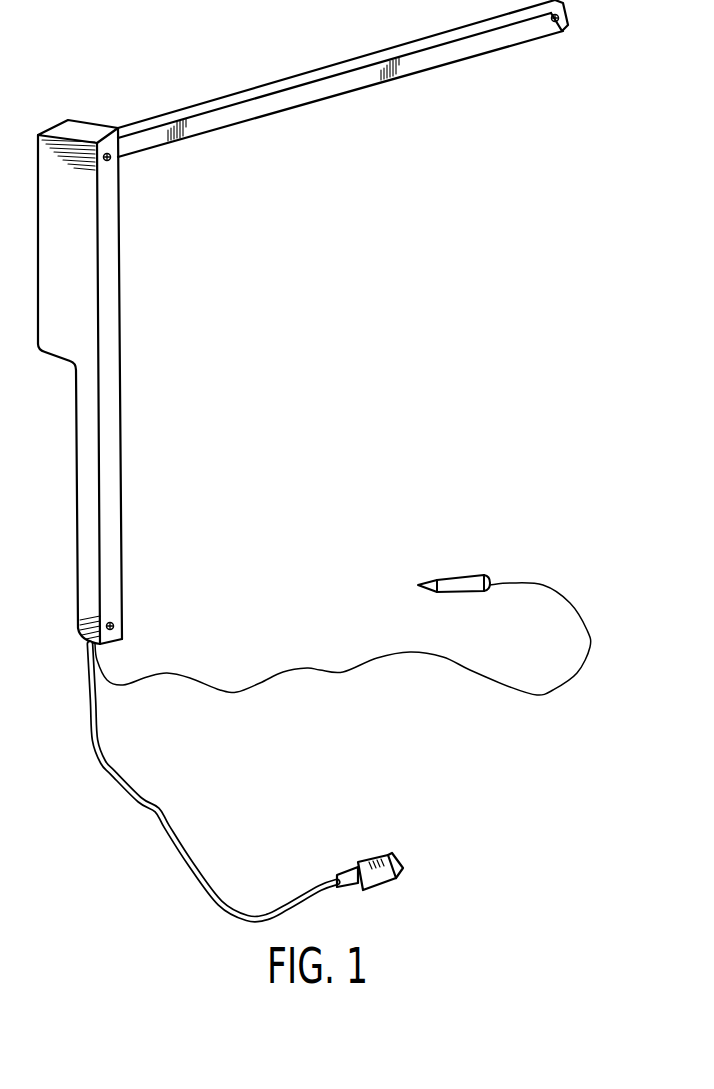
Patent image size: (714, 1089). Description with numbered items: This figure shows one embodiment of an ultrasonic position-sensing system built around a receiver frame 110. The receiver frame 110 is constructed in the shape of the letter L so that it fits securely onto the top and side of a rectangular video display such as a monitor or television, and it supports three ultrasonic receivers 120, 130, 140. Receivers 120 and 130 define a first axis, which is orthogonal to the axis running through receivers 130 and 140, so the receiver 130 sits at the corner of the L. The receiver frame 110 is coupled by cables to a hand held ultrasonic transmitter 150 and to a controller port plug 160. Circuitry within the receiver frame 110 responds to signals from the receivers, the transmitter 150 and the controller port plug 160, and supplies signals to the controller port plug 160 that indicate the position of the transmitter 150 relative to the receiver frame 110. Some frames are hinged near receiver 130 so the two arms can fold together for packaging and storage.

The receiver frame 110 is at (312, 70).
The ultrasonic receiver 120 is at (556, 22).
The ultrasonic receiver 130 is at (111, 159).
The ultrasonic receiver 140 is at (114, 625).
The hand held ultrasonic transmitter 150 is at (455, 608).
The controller port plug 160 is at (392, 857).